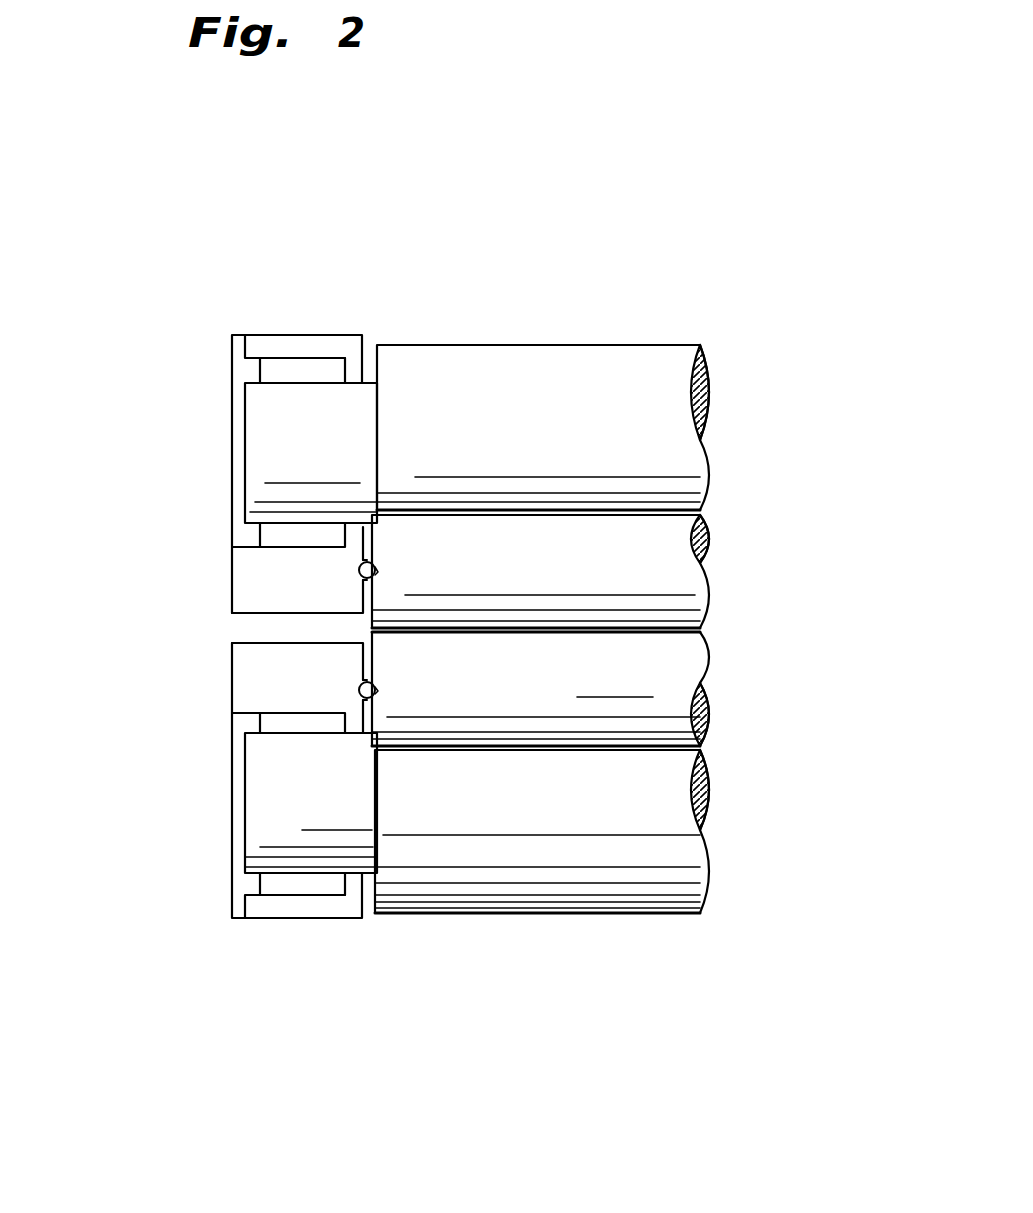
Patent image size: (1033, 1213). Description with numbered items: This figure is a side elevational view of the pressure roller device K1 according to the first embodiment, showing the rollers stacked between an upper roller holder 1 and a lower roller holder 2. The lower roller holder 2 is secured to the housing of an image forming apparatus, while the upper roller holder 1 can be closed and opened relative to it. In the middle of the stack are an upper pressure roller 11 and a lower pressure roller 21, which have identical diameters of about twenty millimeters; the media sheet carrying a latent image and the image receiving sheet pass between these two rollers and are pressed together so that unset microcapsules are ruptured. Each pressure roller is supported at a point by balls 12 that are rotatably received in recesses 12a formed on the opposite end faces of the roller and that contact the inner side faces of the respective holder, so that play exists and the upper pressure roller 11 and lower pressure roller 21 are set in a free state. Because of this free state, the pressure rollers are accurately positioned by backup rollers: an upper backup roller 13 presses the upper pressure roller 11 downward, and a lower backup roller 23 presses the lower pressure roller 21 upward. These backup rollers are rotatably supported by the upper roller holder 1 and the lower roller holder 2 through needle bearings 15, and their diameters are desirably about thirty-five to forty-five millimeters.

The pressure roller device K1 is at (192, 337).
The upper roller holder 1 is at (286, 337).
The lower roller holder 2 is at (283, 910).
The needle bearings 15 is at (327, 372).
The balls 12 is at (358, 573).
The recesses 12a is at (376, 572).
The upper backup roller 13 is at (667, 367).
The upper pressure roller 11 is at (655, 547).
The lower pressure roller 21 is at (665, 672).
The lower backup roller 23 is at (665, 887).